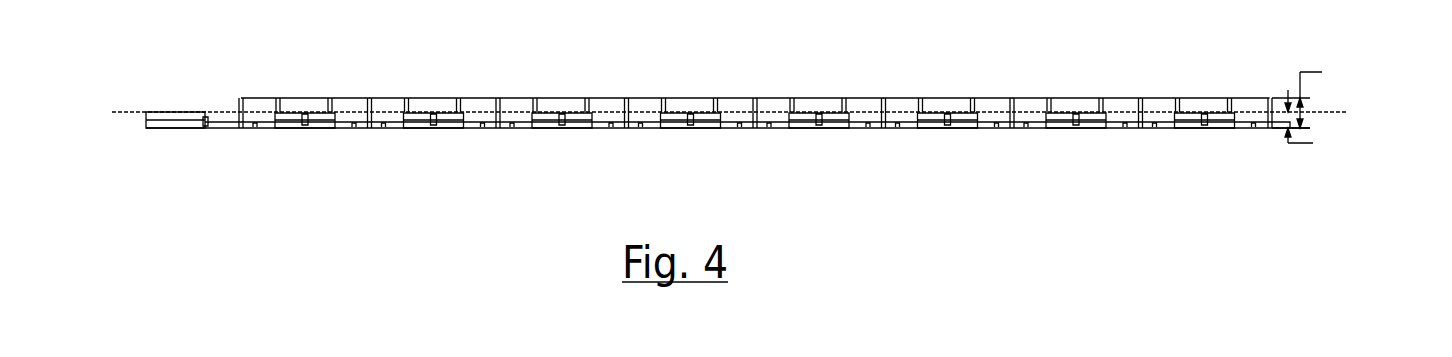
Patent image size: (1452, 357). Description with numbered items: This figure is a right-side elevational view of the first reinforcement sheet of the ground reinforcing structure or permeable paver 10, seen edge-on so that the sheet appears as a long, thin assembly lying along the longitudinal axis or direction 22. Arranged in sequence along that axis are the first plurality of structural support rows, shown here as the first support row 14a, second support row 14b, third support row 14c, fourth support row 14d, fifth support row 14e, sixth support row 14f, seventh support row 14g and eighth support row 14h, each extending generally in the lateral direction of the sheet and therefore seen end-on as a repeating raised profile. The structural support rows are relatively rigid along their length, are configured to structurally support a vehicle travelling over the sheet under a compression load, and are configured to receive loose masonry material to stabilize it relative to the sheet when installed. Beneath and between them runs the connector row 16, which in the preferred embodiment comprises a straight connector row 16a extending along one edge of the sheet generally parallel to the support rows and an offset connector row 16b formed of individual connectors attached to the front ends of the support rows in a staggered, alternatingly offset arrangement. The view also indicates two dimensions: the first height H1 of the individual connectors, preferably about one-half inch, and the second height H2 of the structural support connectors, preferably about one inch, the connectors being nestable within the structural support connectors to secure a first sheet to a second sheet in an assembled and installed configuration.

The permeable paver 10 is at (1238, 63).
The longitudinal axis 22 is at (1347, 112).
The connector row 16 is at (713, 132).
The straight connector row 16a is at (176, 95).
The offset connector row 16b is at (1230, 134).
The first support row 14a is at (305, 144).
The second support row 14b is at (434, 144).
The third support row 14c is at (562, 144).
The fourth support row 14d is at (690, 144).
The fifth support row 14e is at (819, 144).
The sixth support row 14f is at (948, 144).
The seventh support row 14g is at (1076, 144).
The eighth support row 14h is at (1204, 144).
The first height H1 is at (1309, 124).
The second height H2 is at (1307, 98).